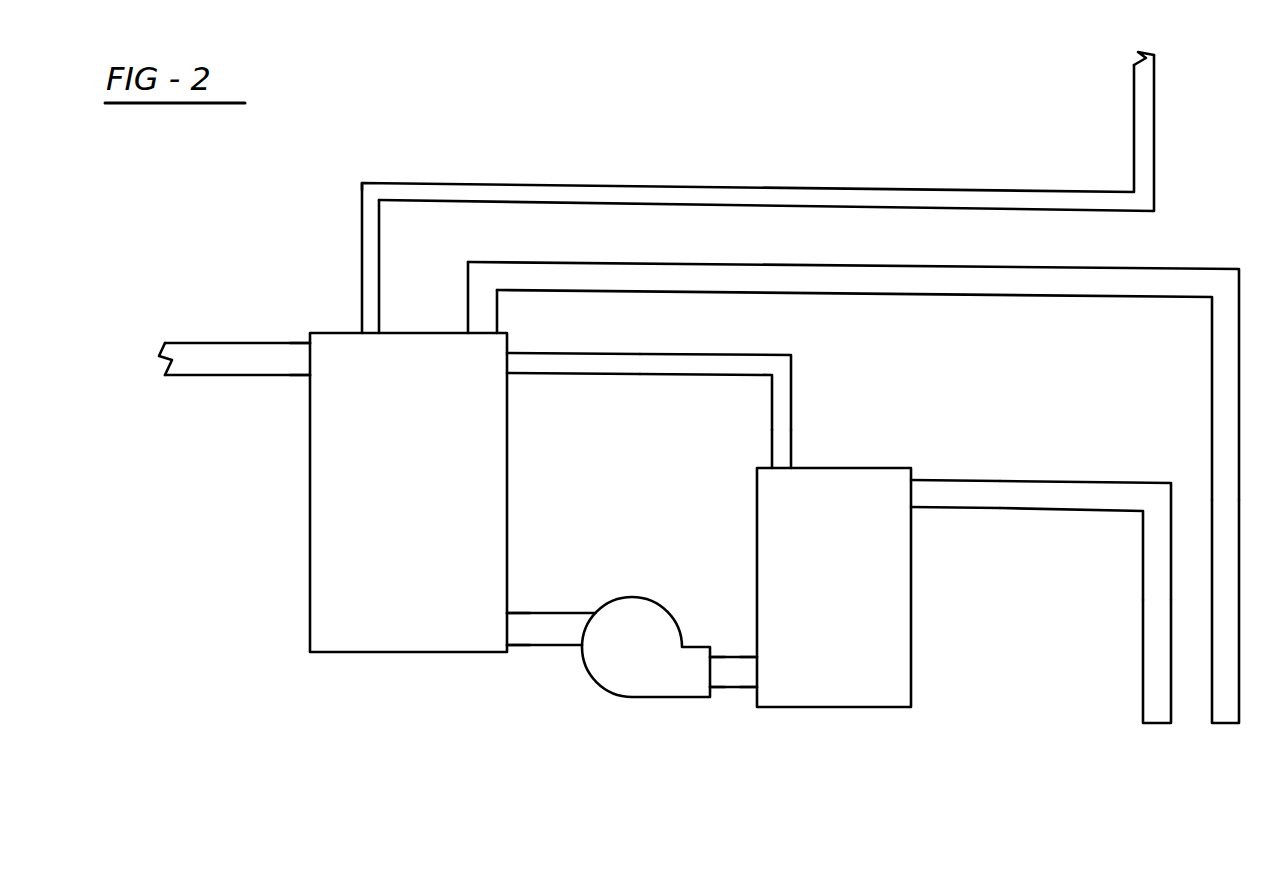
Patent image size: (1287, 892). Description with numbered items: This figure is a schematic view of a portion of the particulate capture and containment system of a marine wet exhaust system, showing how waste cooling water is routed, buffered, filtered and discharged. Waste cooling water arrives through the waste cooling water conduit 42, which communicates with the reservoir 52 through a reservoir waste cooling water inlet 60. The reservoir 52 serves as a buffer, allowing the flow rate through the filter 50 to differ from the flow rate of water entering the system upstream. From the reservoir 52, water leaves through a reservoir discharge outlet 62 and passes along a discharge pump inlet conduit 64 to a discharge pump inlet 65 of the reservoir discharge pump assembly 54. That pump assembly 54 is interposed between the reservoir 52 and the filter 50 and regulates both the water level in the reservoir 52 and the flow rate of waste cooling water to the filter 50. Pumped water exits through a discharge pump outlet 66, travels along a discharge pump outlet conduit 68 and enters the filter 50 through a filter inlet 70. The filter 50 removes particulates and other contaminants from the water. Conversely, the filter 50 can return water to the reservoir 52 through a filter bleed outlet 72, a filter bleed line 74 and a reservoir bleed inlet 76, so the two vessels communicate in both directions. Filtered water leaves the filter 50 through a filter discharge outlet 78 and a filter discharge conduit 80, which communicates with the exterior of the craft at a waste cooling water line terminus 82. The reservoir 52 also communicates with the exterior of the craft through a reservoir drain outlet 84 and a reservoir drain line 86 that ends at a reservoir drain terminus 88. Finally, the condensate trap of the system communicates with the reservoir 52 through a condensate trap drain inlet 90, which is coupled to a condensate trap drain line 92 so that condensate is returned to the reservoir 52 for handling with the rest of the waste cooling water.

The waste cooling water conduit 42 is at (235, 362).
The filter 50 is at (847, 599).
The reservoir 52 is at (414, 532).
The reservoir discharge pump assembly 54 is at (653, 658).
The reservoir waste cooling water inlet 60 is at (313, 364).
The reservoir discharge outlet 62 is at (505, 630).
The discharge pump inlet conduit 64 is at (533, 625).
The discharge pump inlet 65 is at (575, 646).
The discharge pump outlet 66 is at (710, 670).
The discharge pump outlet conduit 68 is at (737, 665).
The filter inlet 70 is at (757, 672).
The filter bleed outlet 72 is at (782, 470).
The filter bleed line 74 is at (786, 410).
The reservoir bleed inlet 76 is at (512, 368).
The filter discharge outlet 78 is at (915, 500).
The filter discharge conduit 80 is at (1062, 500).
The waste cooling water line terminus 82 is at (1158, 725).
The reservoir drain outlet 84 is at (478, 333).
The reservoir drain line 86 is at (1050, 290).
The reservoir drain terminus 88 is at (1233, 725).
The condensate trap drain inlet 90 is at (370, 335).
The condensate trap drain line 92 is at (777, 197).